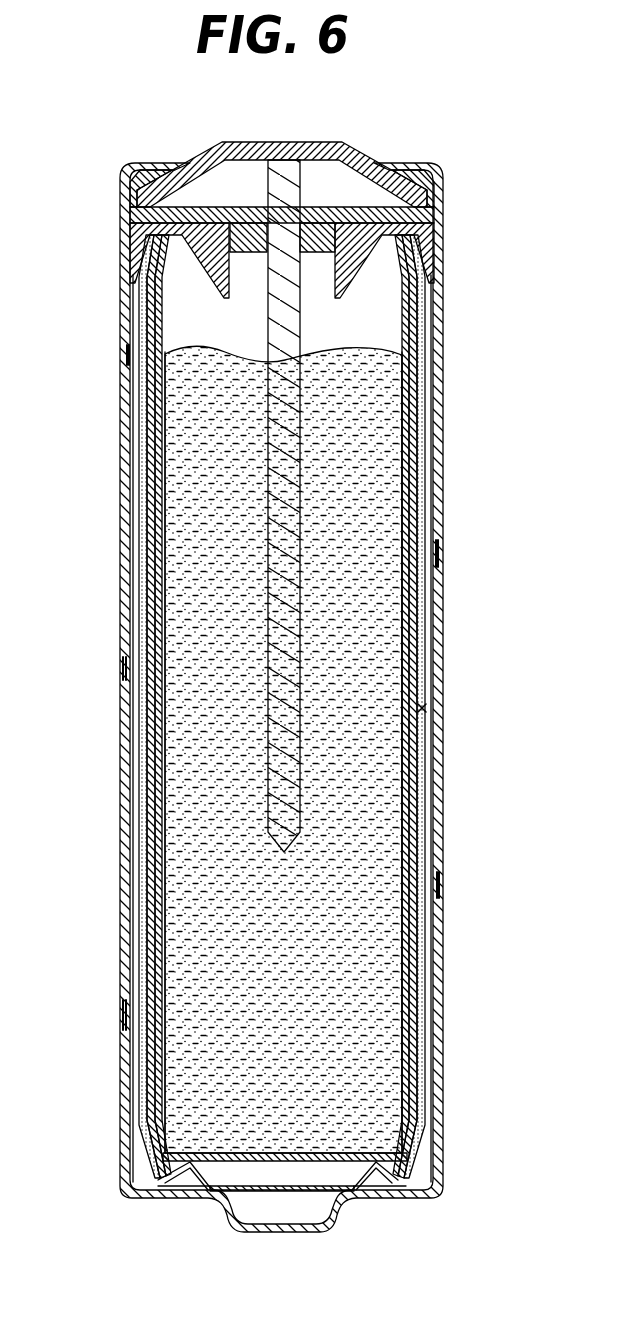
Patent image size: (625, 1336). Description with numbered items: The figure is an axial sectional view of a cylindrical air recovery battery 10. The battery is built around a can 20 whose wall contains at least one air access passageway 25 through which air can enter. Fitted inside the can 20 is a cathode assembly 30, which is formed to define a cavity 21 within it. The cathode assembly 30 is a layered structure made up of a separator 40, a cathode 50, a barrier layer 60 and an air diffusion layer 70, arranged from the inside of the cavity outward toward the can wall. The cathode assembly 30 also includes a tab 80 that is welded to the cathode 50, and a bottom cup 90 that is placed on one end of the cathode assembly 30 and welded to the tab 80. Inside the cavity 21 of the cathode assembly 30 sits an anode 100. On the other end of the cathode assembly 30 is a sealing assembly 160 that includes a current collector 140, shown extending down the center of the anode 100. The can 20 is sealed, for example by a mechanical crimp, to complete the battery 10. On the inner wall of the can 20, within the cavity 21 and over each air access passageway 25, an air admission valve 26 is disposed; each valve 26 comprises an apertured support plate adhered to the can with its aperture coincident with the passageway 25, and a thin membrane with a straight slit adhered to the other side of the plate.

The cylindrical air recovery battery 10 is at (486, 120).
The can 20 is at (443, 430).
The cavity 21 is at (130, 722).
The air access passageway 25 is at (445, 553).
The air admission valve 26 is at (126, 360).
The cathode assembly 30 is at (422, 708).
The separator 40 is at (160, 832).
The cathode 50 is at (152, 606).
The barrier layer 60 is at (145, 470).
The air diffusion layer 70 is at (140, 331).
The tab 80 is at (165, 1162).
The bottom cup 90 is at (406, 1160).
The anode 100 is at (345, 988).
The current collector 140 is at (272, 176).
The sealing assembly 160 is at (100, 143).